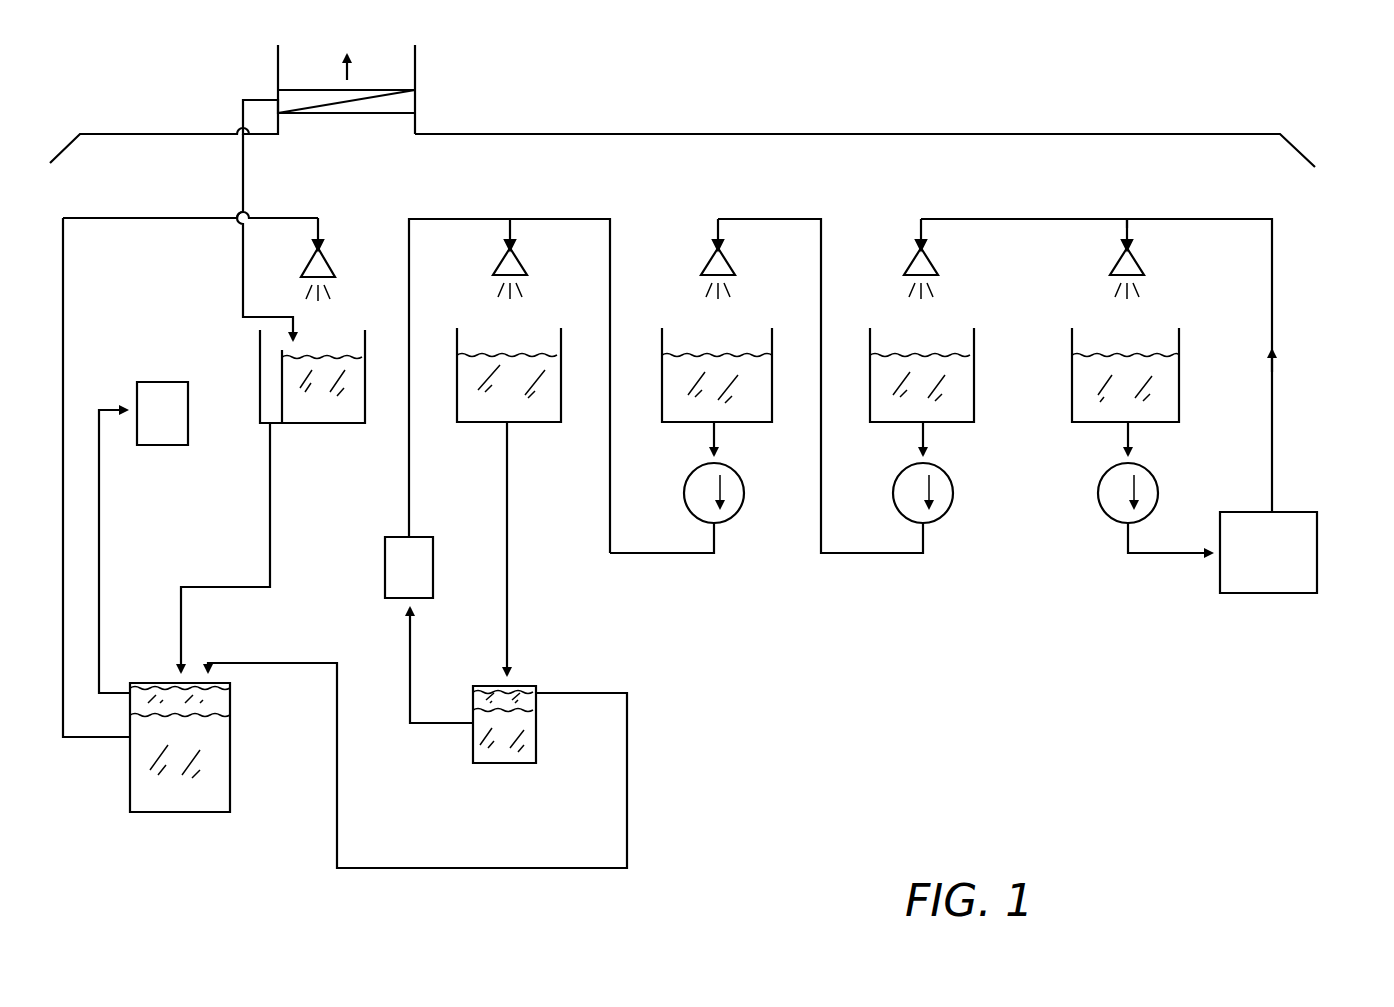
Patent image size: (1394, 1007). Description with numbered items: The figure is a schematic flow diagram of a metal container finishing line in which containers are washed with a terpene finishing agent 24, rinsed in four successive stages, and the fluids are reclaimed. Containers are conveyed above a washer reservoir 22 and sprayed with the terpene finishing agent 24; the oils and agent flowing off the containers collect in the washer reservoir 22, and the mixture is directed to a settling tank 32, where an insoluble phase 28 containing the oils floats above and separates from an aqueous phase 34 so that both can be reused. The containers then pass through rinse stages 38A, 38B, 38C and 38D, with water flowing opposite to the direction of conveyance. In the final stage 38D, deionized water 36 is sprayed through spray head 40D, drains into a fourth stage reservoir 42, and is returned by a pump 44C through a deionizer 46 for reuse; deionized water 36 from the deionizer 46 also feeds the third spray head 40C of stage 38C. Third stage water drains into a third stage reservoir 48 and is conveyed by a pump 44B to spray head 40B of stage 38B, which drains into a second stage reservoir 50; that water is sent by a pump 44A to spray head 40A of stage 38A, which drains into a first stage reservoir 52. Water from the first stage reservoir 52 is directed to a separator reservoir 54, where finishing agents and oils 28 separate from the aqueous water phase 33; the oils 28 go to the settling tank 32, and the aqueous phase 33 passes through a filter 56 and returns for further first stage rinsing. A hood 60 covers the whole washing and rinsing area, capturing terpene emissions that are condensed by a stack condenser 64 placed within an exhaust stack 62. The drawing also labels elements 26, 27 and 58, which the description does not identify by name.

The washer reservoir 22 is at (365, 392).
The terpene finishing agent 24 is at (345, 290).
The weir 26 is at (282, 392).
The floating layer 27 is at (526, 696).
The insoluble phase 28 is at (222, 702).
The settling tank 32 is at (230, 760).
The aqueous water phase 33 is at (490, 752).
The aqueous phase 34 is at (212, 797).
The deionized water 36 is at (1243, 578).
The first rinse stage 38A is at (516, 205).
The second rinse stage 38B is at (761, 205).
The third rinse stage 38C is at (924, 203).
The fourth rinse stage 38D is at (1141, 203).
The spray head 40A is at (520, 258).
The spray head 40B is at (728, 258).
The third spray head 40C is at (931, 258).
The spray head 40D is at (1137, 258).
The fourth stage reservoir 42 is at (1179, 395).
The pump 44A is at (744, 489).
The pump 44B is at (953, 489).
The pump 44C is at (1158, 489).
The deionizer 46 is at (1317, 560).
The third stage reservoir 48 is at (974, 395).
The second stage reservoir 50 is at (772, 395).
The first stage reservoir 52 is at (561, 395).
The separator reservoir 54 is at (536, 740).
The filter 56 is at (433, 560).
The pump 58 is at (188, 408).
The hood 60 is at (727, 134).
The exhaust stack 62 is at (418, 122).
The stack condenser 64 is at (278, 96).